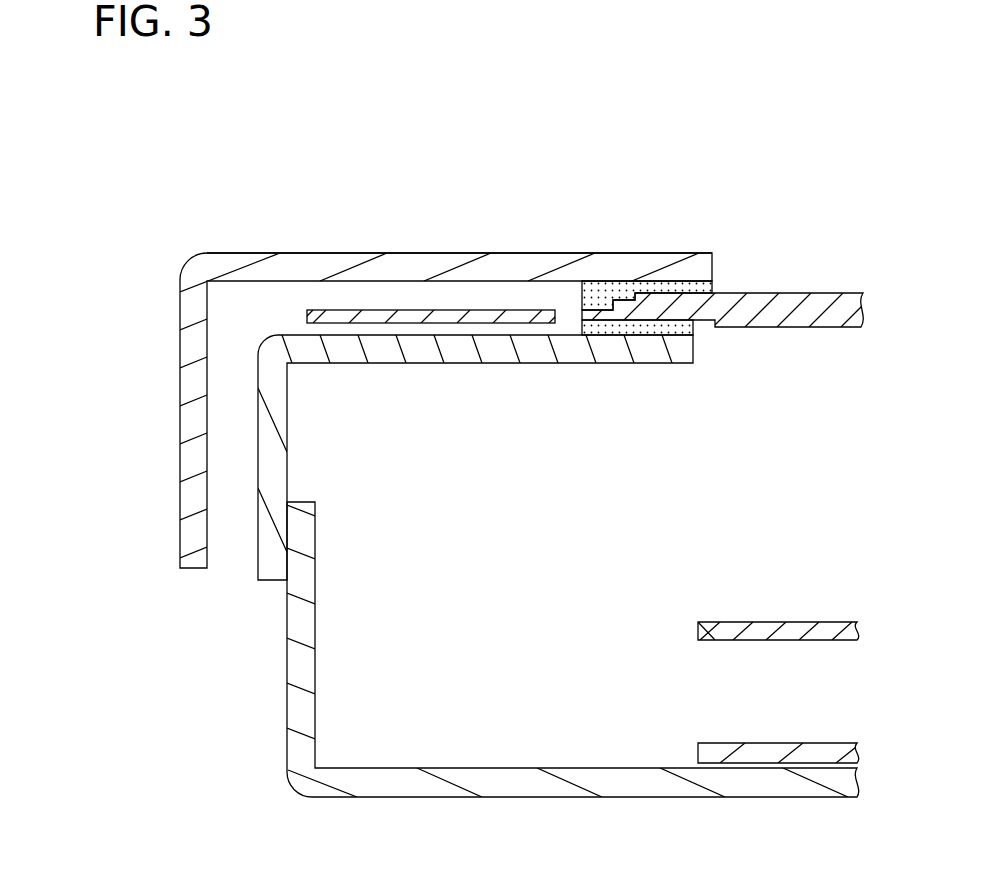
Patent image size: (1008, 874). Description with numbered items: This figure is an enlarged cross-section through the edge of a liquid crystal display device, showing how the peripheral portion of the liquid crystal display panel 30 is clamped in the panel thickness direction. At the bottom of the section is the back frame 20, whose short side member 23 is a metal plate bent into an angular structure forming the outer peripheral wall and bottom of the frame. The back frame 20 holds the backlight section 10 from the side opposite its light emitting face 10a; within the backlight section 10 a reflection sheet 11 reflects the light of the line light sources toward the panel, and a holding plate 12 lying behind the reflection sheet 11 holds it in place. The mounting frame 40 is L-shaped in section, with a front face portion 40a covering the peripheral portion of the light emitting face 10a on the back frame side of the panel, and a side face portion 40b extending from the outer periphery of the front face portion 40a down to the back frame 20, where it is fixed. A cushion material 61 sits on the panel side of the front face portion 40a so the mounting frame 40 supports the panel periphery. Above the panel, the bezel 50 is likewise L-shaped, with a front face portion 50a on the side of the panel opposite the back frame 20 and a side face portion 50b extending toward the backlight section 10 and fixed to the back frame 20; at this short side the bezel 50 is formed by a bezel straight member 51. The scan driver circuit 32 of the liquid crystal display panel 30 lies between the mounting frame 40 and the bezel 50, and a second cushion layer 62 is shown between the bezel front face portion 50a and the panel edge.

The backlight section 10 is at (735, 655).
The light emitting face 10a is at (727, 515).
The reflection sheet 11 is at (838, 622).
The holding plate 12 is at (838, 743).
The back frame 20 is at (285, 713).
The short side member 23 is at (520, 797).
The liquid crystal display panel 30 is at (822, 292).
The scan driver circuit 32 is at (438, 312).
The mounting frame 40 is at (68, 362).
The front face portion 40a is at (300, 335).
The side face portion 40b is at (268, 407).
The bezel 50 is at (273, 167).
The front face portion 50a is at (255, 253).
The side face portion 50b is at (180, 333).
The bezel straight member 51 is at (527, 253).
The cushion material 61 is at (695, 325).
The upper sealing resin 62 is at (712, 288).